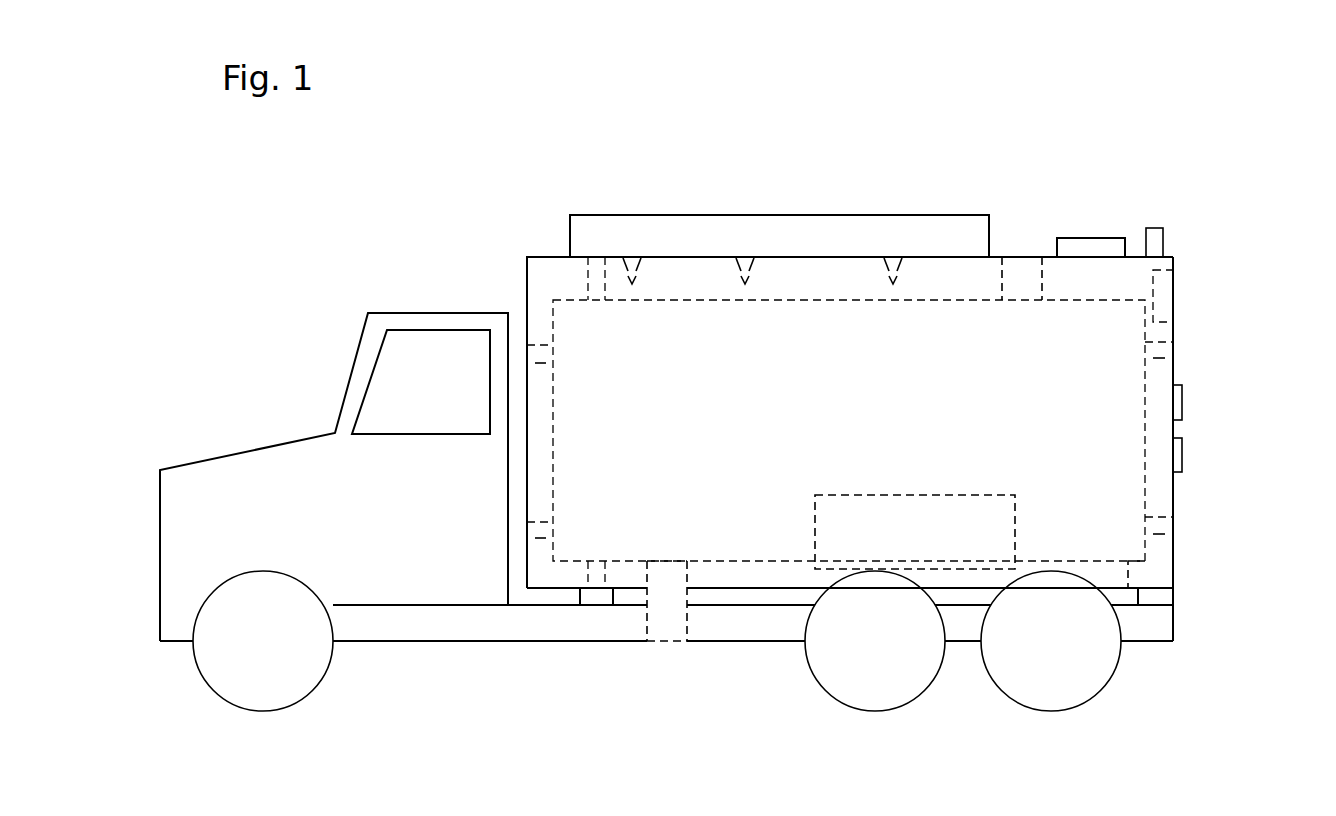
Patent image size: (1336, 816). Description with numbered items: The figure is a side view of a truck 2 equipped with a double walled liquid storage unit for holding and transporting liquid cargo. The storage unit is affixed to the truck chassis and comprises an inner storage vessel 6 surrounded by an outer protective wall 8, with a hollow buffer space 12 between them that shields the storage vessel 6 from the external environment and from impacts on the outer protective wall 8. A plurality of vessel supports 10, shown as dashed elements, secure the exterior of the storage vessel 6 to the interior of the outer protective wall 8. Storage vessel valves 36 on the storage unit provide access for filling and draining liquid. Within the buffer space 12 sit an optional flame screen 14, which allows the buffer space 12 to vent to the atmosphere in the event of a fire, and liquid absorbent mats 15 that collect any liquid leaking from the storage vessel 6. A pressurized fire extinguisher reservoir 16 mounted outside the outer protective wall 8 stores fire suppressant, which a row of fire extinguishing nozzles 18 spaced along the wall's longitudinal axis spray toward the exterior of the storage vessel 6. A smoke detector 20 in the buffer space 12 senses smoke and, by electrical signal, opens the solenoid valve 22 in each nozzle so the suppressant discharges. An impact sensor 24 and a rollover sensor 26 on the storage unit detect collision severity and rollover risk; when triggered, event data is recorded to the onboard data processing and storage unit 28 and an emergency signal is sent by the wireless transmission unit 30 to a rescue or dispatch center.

The truck 2 is at (217, 457).
The storage vessel 6 is at (747, 563).
The outer protective wall 8 is at (1173, 568).
The vessel supports 10 is at (597, 300).
The buffer space 12 is at (542, 287).
The flame screen 14 is at (1108, 237).
The liquid absorbent mats 15 is at (953, 495).
The fire extinguisher reservoir 16 is at (672, 213).
The fire extinguishing nozzles 18 is at (793, 334).
The smoke detector 20 is at (1163, 295).
The solenoid valve 22 is at (636, 284).
The impact sensor 24 is at (1182, 455).
The rollover sensor 26 is at (1182, 400).
The data processing and storage unit 28 is at (1211, 191).
The wireless transmission unit 30 is at (1153, 228).
The storage vessel valves 36 is at (1017, 257).